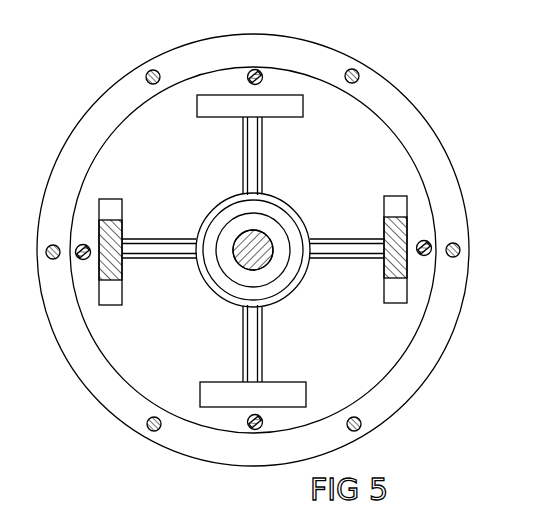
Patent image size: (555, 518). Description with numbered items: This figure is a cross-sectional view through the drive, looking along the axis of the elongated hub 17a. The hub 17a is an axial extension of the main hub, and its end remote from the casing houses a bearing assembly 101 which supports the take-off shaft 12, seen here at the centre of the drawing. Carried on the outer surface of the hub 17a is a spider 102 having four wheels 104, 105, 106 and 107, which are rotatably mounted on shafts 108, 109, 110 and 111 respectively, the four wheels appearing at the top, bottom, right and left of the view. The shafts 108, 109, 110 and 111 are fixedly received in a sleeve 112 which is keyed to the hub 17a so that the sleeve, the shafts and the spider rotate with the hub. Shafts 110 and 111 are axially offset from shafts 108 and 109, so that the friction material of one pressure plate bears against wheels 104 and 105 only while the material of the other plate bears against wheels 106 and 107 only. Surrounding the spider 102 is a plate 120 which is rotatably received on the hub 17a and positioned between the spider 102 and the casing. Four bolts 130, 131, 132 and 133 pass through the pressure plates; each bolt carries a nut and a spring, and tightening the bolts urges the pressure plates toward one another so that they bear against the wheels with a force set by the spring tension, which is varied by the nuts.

The take-off shaft 12 is at (263, 250).
The elongated hub 17a is at (268, 213).
The bearing assembly 101 is at (240, 229).
The spider 102 is at (290, 287).
The wheel 104 is at (265, 105).
The wheel 105 is at (275, 397).
The wheel 106 is at (397, 289).
The wheel 107 is at (115, 292).
The shaft 108 is at (247, 155).
The shaft 109 is at (253, 343).
The shaft 110 is at (318, 248).
The shaft 111 is at (172, 252).
The sleeve 112 is at (222, 211).
The plate 120 is at (87, 152).
The bolt 130 is at (259, 74).
The bolt 131 is at (429, 244).
The bolt 132 is at (250, 426).
The bolt 133 is at (79, 256).